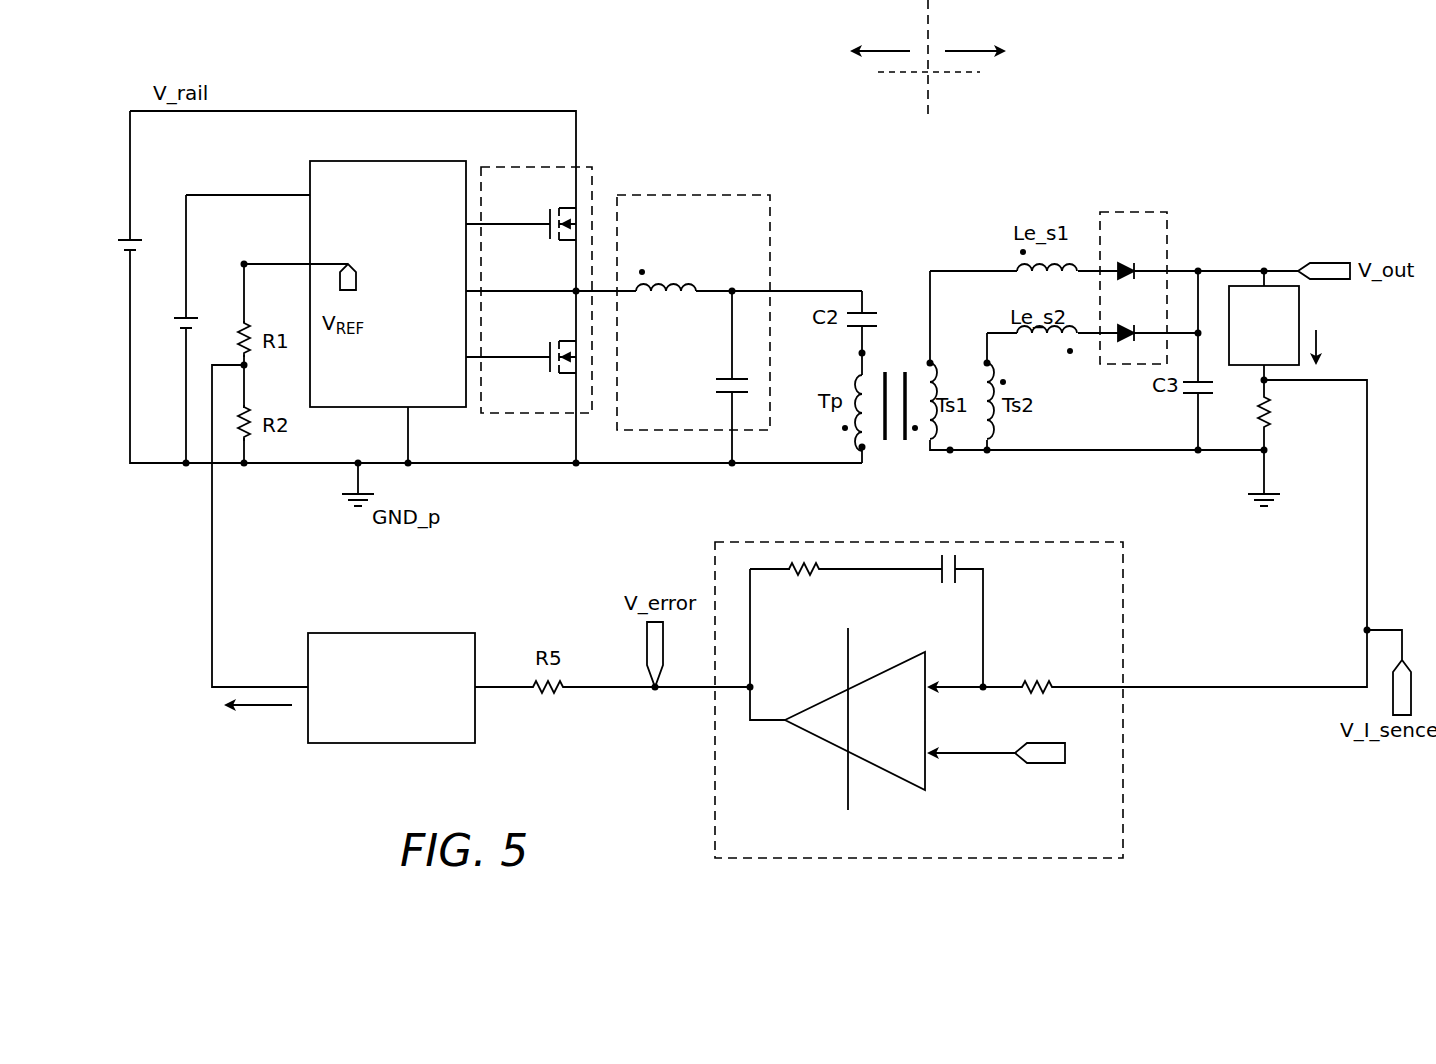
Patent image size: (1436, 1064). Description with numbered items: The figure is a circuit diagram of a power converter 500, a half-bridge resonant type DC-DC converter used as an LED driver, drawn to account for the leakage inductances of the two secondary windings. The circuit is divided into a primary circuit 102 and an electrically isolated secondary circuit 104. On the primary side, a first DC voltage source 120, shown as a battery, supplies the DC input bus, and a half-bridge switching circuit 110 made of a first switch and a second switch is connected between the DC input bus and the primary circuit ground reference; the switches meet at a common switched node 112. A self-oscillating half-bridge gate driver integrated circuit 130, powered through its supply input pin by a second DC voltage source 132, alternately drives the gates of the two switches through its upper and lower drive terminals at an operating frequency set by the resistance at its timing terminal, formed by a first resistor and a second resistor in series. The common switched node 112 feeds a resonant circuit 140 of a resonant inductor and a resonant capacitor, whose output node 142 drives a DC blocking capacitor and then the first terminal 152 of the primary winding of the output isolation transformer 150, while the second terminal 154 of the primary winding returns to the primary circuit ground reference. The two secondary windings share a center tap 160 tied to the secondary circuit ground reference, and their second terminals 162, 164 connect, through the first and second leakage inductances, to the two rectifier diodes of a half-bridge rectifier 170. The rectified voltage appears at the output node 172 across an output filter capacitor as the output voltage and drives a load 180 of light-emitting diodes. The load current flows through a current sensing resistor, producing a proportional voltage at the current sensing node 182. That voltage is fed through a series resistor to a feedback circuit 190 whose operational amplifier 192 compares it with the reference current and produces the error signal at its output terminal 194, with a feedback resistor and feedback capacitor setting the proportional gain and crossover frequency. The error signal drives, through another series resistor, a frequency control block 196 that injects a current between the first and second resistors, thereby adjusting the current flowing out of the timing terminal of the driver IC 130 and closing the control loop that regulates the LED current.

The primary circuit 102 is at (830, 162).
The secondary circuit 104 is at (975, 162).
The half-bridge switching circuit 110 is at (596, 165).
The common switched node 112 is at (576, 289).
The first DC voltage source 120 is at (116, 250).
The self-oscillating half-bridge gate driver integrated circuit 130 is at (375, 160).
The second DC voltage source 132 is at (178, 328).
The resonant circuit 140 is at (722, 192).
The output node 142 is at (732, 290).
The output isolation transformer 150 is at (896, 448).
The first terminal of the primary winding 152 is at (862, 353).
The second terminal of the primary winding 154 is at (862, 448).
The center tap 160 is at (951, 452).
The second terminal of the first secondary winding 162 is at (929, 362).
The second terminal of the second secondary winding 164 is at (986, 362).
The half-bridge rectifier 170 is at (1133, 209).
The output node of the half-bridge rectifier 172 is at (1199, 270).
The load 180 is at (1300, 300).
The current sensing node 182 is at (1262, 382).
The feedback circuit 190 is at (1128, 824).
The operational amplifier 192 is at (902, 757).
The output terminal 194 is at (750, 690).
The frequency control block 196 is at (425, 743).
The power converter 500 is at (1205, 106).